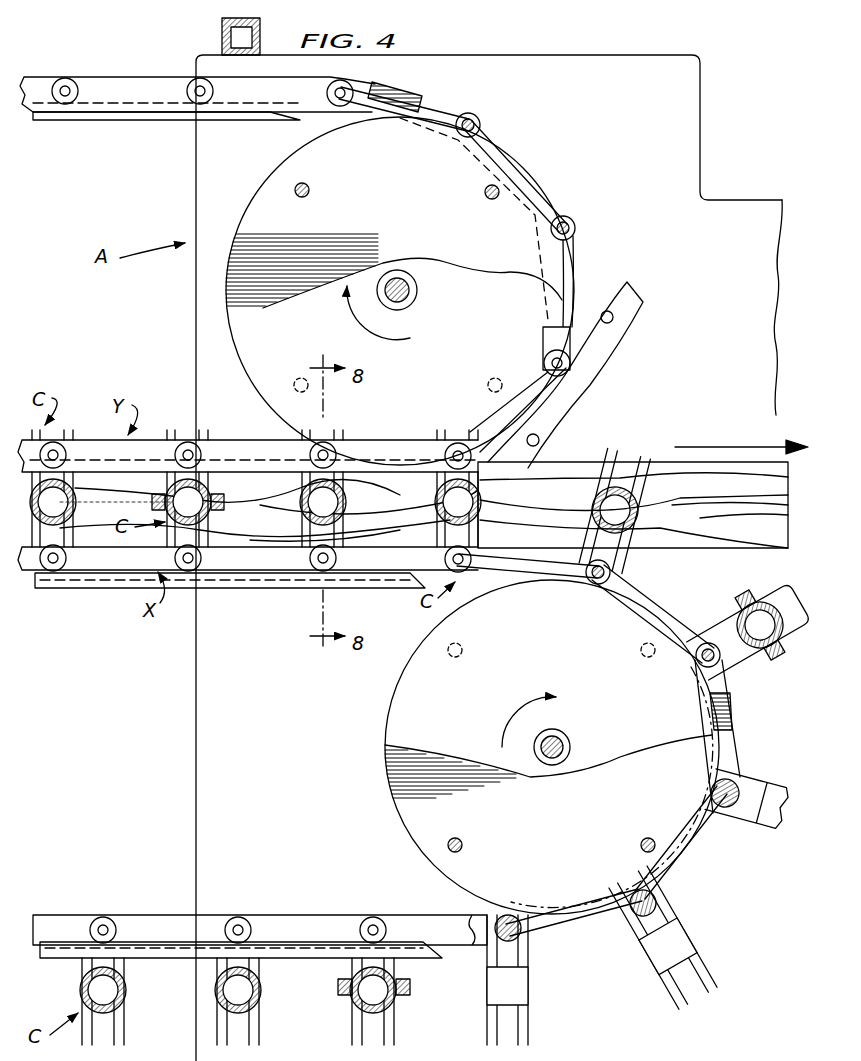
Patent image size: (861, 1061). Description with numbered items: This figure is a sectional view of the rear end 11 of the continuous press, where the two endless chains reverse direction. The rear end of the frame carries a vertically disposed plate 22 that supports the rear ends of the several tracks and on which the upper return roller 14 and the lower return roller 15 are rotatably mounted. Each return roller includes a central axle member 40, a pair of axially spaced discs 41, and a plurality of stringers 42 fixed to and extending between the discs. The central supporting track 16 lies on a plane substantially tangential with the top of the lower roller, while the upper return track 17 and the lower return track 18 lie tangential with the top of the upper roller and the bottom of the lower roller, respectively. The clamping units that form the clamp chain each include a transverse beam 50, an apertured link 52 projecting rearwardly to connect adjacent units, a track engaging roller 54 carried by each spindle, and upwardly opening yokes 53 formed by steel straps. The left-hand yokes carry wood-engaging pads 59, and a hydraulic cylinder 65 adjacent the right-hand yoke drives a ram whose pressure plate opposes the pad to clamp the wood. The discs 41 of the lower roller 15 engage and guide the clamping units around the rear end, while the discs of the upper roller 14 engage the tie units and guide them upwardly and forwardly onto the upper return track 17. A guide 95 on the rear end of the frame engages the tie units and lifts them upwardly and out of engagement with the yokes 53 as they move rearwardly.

The rear end of the frame 11 is at (718, 108).
The upper return roller 14 is at (458, 170).
The lower return roller 15 is at (415, 705).
The central supporting track 16 is at (107, 588).
The upper return track 17 is at (130, 120).
The lower return track 18 is at (168, 960).
The plate 22 is at (645, 75).
The central axle member 40 is at (403, 282).
The disc 41 is at (430, 112).
The stringer 42 is at (500, 194).
The beam 50 is at (710, 790).
The apertured link 52 is at (262, 578).
The yoke 53 is at (178, 430).
The track engaging roller 54 is at (195, 580).
The wood-engaging pad 59 is at (522, 994).
The cylinder 65 is at (212, 512).
The guide 95 is at (580, 392).